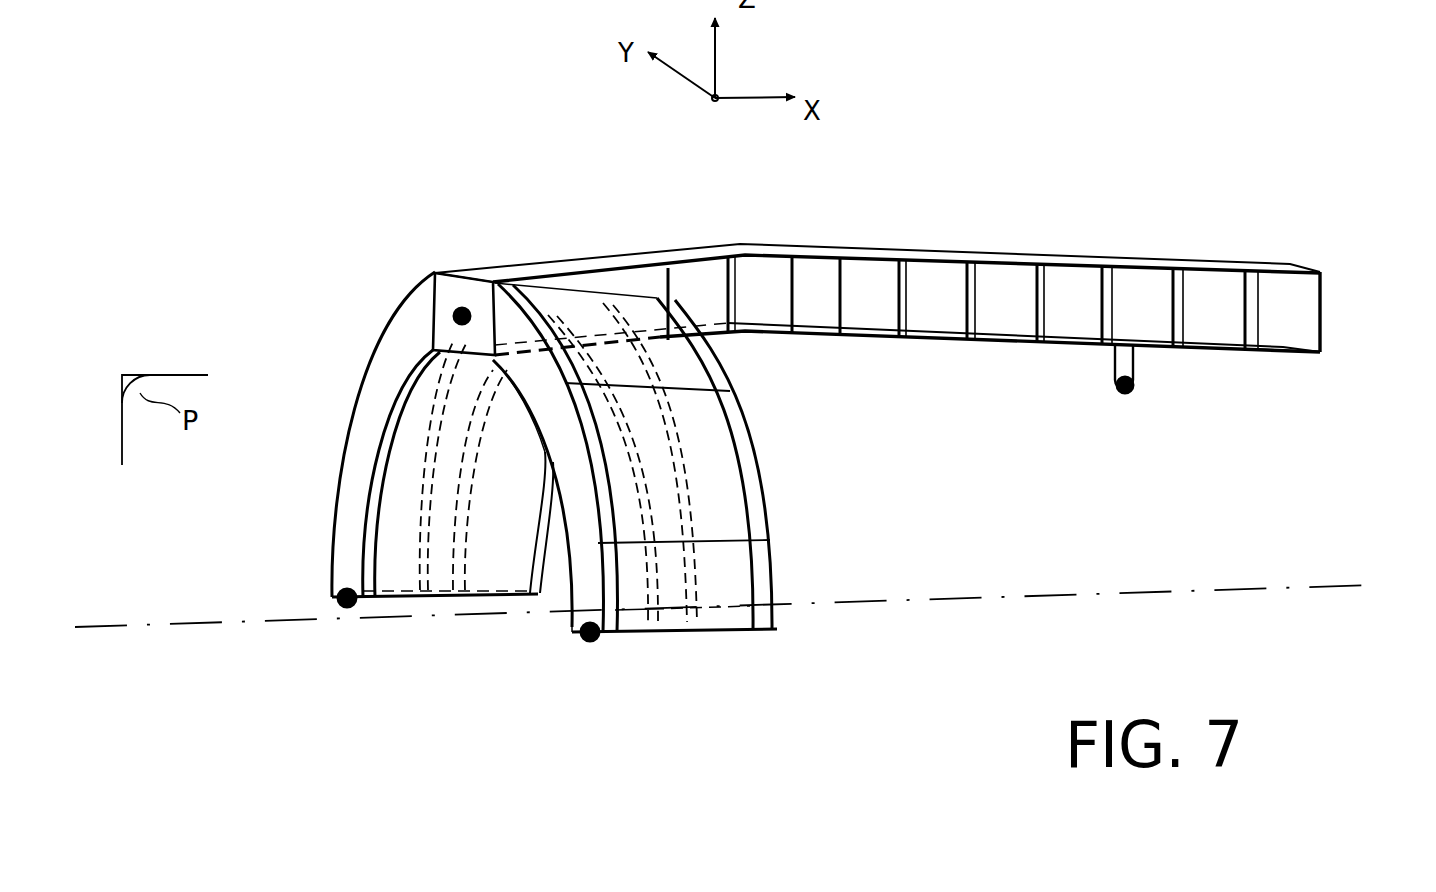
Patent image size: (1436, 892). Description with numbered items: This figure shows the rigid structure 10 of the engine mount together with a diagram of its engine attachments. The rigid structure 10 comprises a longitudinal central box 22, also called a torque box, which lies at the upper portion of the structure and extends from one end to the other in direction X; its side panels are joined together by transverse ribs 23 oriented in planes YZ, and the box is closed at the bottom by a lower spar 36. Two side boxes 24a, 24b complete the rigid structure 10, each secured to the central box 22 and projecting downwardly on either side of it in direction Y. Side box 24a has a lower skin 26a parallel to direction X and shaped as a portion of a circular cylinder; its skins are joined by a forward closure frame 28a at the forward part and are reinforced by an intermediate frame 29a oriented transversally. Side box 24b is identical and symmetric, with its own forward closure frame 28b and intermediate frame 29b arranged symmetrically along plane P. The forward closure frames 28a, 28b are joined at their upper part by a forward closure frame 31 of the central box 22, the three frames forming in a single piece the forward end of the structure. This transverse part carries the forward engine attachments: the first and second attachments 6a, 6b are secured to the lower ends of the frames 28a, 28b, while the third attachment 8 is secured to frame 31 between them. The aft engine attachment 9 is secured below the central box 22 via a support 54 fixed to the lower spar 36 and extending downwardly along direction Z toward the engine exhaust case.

The rigid structure 10 is at (616, 217).
The longitudinal central box 22 is at (955, 246).
The transverse ribs 23 is at (1012, 317).
The side box 24a is at (776, 492).
The side box 24b is at (374, 326).
The lower skin 26a is at (572, 598).
The forward closure frame 28a is at (560, 450).
The forward closure frame 28b is at (365, 419).
The intermediate frame 29a is at (700, 558).
The intermediate frame 29b is at (422, 512).
The forward closure frame 31 is at (437, 303).
The lower spar 36 is at (1290, 357).
The support 54 is at (1130, 358).
The first forward engine attachment 6a is at (592, 636).
The second forward engine attachment 6b is at (345, 602).
The third forward engine attachment 8 is at (462, 324).
The aft engine attachment 9 is at (1130, 393).